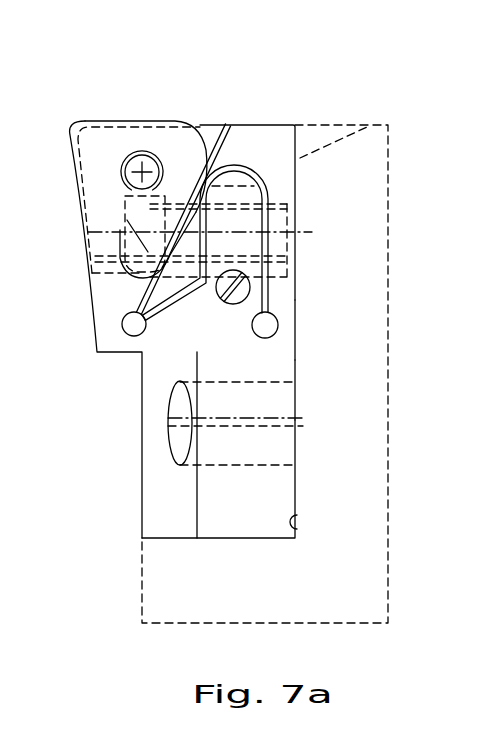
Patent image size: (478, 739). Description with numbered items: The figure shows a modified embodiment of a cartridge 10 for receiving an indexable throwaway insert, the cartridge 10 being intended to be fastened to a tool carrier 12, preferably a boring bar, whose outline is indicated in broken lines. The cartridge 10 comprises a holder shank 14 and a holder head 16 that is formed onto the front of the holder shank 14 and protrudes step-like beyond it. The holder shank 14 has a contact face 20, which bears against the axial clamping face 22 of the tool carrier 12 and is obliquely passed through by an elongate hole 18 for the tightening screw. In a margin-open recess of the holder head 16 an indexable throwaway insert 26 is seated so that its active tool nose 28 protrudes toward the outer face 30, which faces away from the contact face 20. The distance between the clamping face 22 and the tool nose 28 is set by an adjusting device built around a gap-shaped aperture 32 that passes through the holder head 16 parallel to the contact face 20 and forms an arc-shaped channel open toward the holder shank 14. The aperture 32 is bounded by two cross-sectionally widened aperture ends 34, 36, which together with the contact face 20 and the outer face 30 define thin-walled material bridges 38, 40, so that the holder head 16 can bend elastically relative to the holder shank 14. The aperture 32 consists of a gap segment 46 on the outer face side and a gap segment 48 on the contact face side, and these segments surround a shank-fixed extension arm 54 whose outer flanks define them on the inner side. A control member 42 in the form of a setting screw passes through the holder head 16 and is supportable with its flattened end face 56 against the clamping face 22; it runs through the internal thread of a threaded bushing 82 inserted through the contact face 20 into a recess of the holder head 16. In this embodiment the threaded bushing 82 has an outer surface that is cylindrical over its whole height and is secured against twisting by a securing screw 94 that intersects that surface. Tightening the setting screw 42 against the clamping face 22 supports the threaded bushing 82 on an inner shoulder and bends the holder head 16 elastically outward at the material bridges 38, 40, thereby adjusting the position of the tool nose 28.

The cartridge 10 is at (315, 225).
The tool carrier 12 is at (370, 518).
The holder shank 14 is at (283, 372).
The holder head 16 is at (252, 143).
The elongate hole 18 is at (176, 405).
The contact face 20 is at (300, 483).
The clamping face 22 is at (300, 530).
The indexable throwaway insert 26 is at (187, 150).
The tool nose 28 is at (63, 119).
The outer face 30 is at (93, 296).
The gap-shaped aperture 32 is at (265, 167).
The aperture end 34 is at (268, 325).
The aperture end 36 is at (123, 331).
The material bridge 38 is at (287, 343).
The material bridge 40 is at (131, 345).
The control member 42 is at (300, 207).
The gap segment 46 is at (98, 233).
The gap segment 48 is at (268, 250).
The extension arm 54 is at (250, 226).
The end face 56 is at (295, 218).
The threaded bushing 82 is at (367, 127).
The securing screw 94 is at (228, 305).